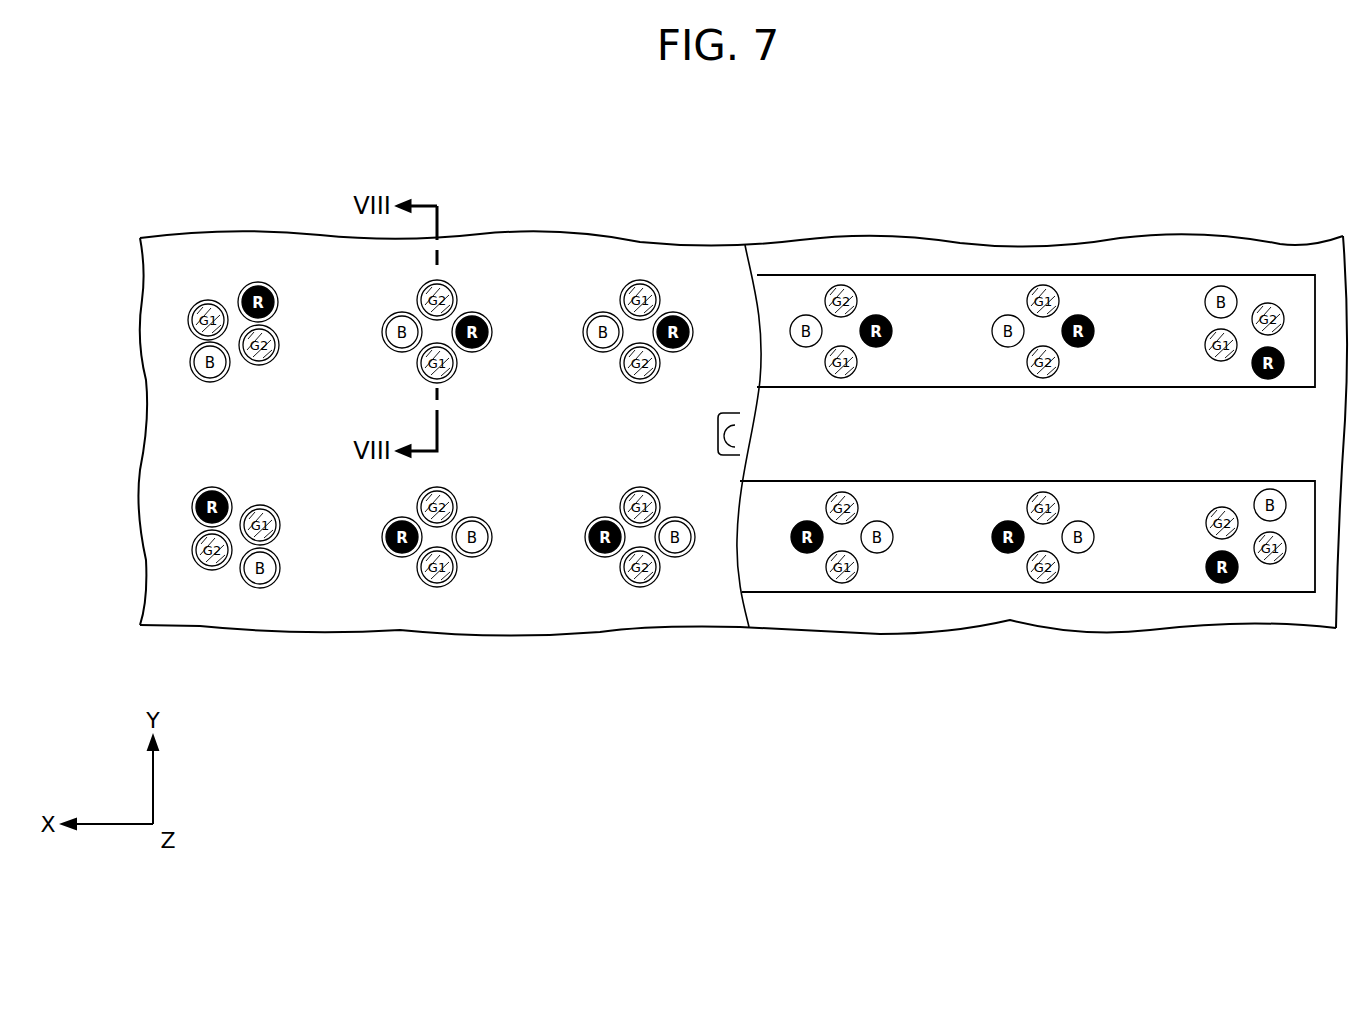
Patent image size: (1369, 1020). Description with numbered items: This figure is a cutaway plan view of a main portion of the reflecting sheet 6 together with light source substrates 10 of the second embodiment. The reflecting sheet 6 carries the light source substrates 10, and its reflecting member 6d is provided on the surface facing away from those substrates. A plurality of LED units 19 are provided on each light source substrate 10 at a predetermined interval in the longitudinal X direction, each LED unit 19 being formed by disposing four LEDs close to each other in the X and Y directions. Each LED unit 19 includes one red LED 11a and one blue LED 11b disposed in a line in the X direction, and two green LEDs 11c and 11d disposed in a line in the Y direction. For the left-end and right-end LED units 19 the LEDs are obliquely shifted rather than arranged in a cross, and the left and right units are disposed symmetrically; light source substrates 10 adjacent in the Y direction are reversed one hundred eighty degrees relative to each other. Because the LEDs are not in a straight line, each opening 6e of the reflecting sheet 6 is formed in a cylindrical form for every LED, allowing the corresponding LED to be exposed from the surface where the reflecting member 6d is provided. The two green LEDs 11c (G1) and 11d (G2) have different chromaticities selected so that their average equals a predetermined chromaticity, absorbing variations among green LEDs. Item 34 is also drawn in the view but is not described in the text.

The reflecting sheet 6 is at (339, 264).
The reflecting member 6d is at (162, 396).
The opening 6e is at (202, 303).
The light source substrate 10 is at (957, 557).
The red LED 11a is at (398, 554).
The blue LED 11b is at (472, 554).
The green LED 11c is at (437, 584).
The green LED 11d is at (418, 500).
The LED unit 19 is at (838, 437).
The alignment mark 34 is at (736, 408).